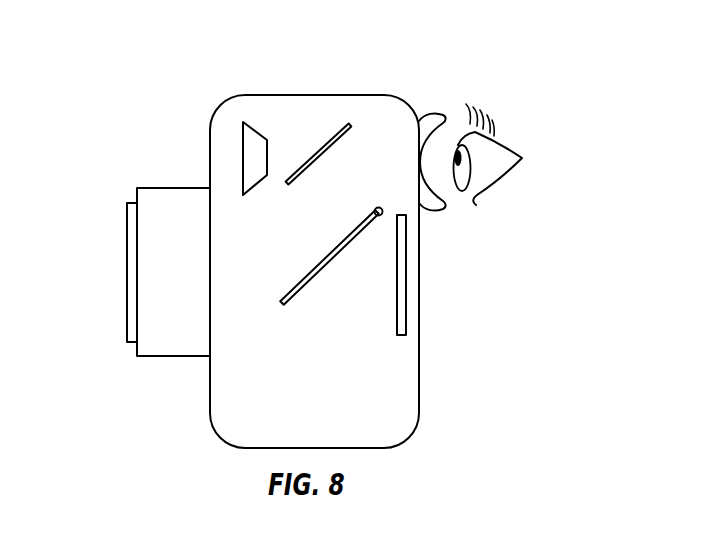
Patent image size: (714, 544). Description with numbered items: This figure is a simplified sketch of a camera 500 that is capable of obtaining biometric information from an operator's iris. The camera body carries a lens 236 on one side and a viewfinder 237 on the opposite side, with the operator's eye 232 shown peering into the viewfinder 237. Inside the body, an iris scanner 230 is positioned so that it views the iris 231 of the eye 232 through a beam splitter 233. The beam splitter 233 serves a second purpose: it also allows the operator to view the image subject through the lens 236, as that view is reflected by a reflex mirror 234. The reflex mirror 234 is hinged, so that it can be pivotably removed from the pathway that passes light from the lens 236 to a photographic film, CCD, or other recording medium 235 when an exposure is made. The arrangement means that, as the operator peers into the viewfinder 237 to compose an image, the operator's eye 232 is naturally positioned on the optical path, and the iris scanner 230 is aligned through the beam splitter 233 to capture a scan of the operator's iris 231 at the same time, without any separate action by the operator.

The electronic viewfinder device body 500 is at (403, 410).
The iris scanner 230 is at (240, 142).
The iris 231 is at (467, 165).
The eye 232 is at (493, 158).
The beam splitter 233 is at (348, 125).
The reflex mirror 234 is at (330, 252).
The recording medium 235 is at (405, 287).
The lens 236 is at (127, 273).
The viewfinder 237 is at (437, 112).